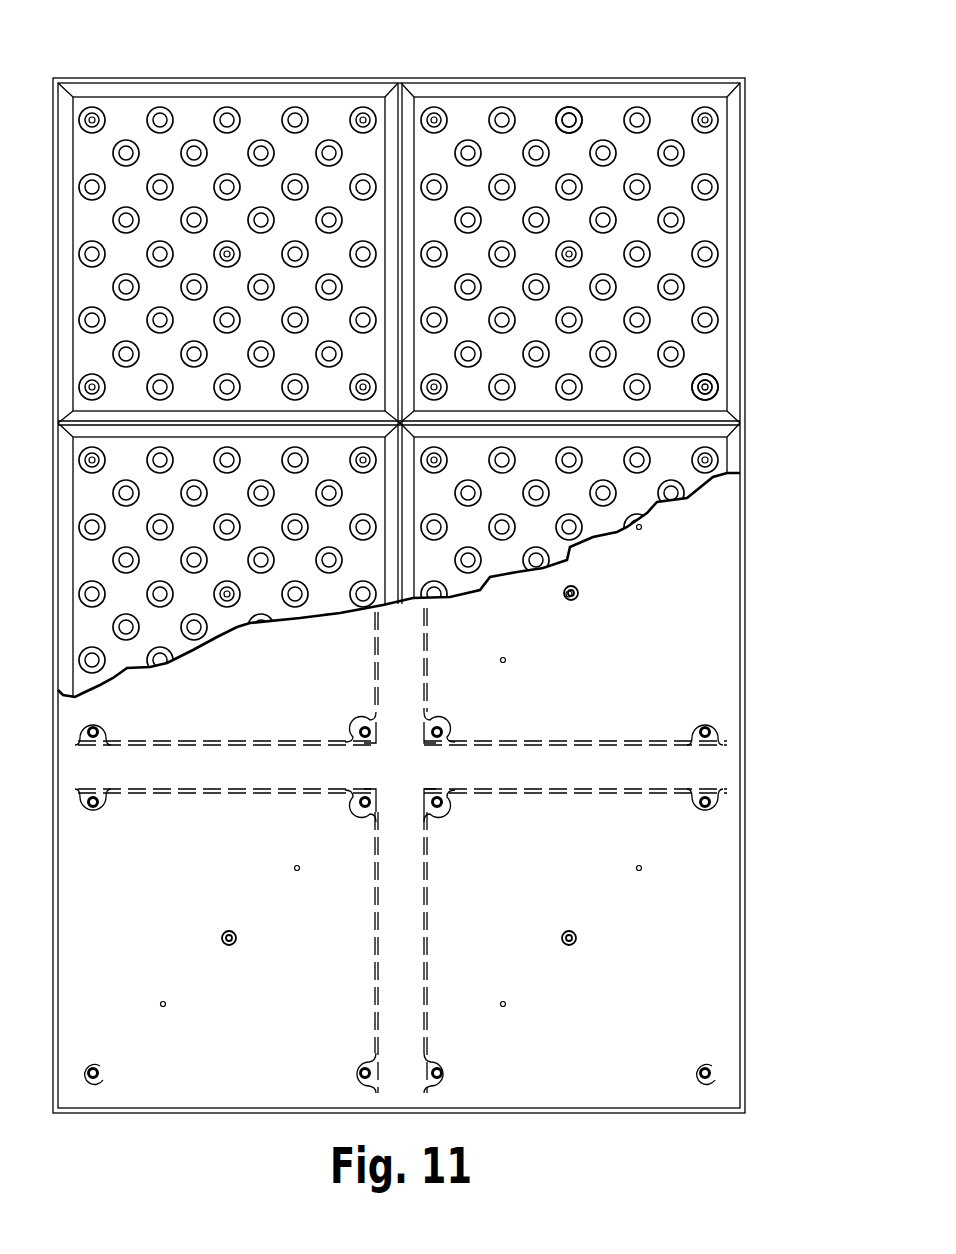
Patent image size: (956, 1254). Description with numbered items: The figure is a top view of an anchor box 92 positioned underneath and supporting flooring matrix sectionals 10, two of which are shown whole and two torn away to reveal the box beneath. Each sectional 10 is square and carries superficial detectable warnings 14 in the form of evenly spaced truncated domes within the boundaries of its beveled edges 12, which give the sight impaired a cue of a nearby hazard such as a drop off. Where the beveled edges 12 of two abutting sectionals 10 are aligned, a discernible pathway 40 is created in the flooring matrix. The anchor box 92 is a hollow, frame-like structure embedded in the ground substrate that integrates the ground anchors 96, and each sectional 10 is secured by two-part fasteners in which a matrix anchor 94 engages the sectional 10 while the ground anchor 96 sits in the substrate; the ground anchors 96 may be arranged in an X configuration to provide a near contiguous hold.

The flooring matrix sectional 10 is at (702, 72).
The beveled edge 12 is at (733, 230).
The detectable warning 14 is at (571, 106).
The discernible pathway 40 is at (398, 82).
The anchor box 92 is at (752, 868).
The matrix anchor 94 is at (718, 386).
The ground anchor 96 is at (578, 593).